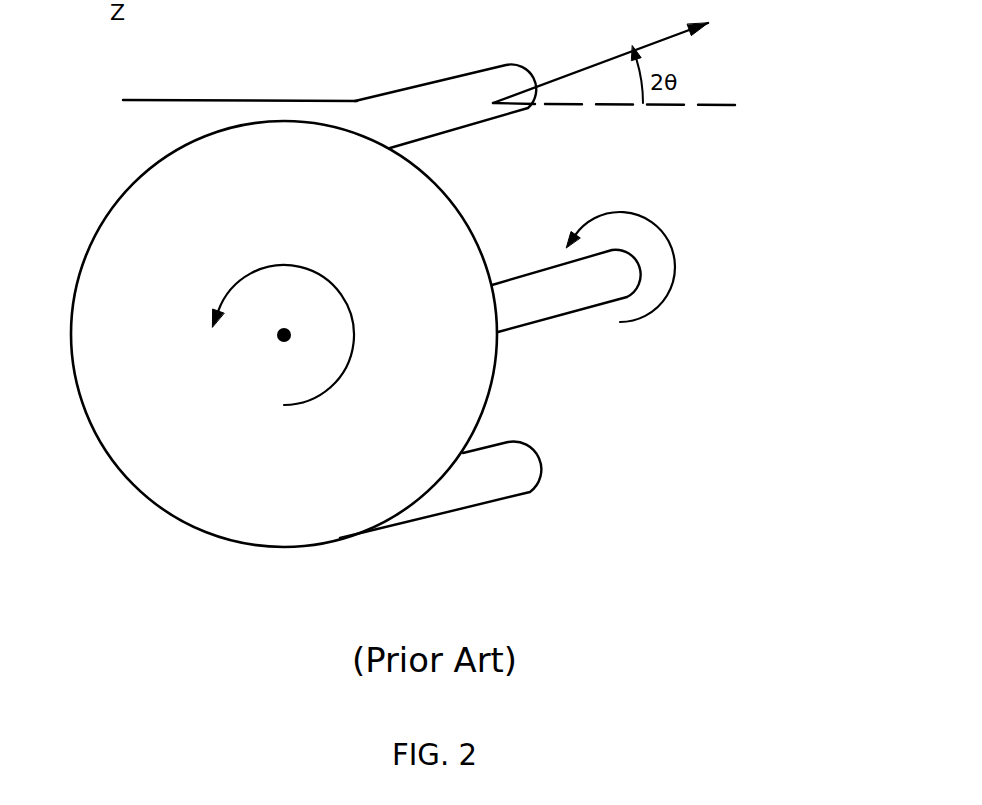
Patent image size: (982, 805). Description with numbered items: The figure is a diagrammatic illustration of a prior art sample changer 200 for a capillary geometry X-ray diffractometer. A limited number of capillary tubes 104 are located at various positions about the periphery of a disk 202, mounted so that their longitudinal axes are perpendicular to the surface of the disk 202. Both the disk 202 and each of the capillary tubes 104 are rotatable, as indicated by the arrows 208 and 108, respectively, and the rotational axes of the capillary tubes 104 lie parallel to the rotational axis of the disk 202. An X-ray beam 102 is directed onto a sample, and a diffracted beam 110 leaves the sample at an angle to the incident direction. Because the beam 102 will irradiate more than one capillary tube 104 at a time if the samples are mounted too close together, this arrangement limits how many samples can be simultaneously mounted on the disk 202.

The X-ray beam 102 is at (251, 100).
The capillary tube 104 is at (443, 125).
The arrow indicating rotation of capillary tube 108 is at (667, 245).
The diffracted beam 110 is at (639, 53).
The sample changer 200 is at (677, 532).
The disk 202 is at (306, 470).
The arrow indicating rotation of disk 208 is at (258, 265).